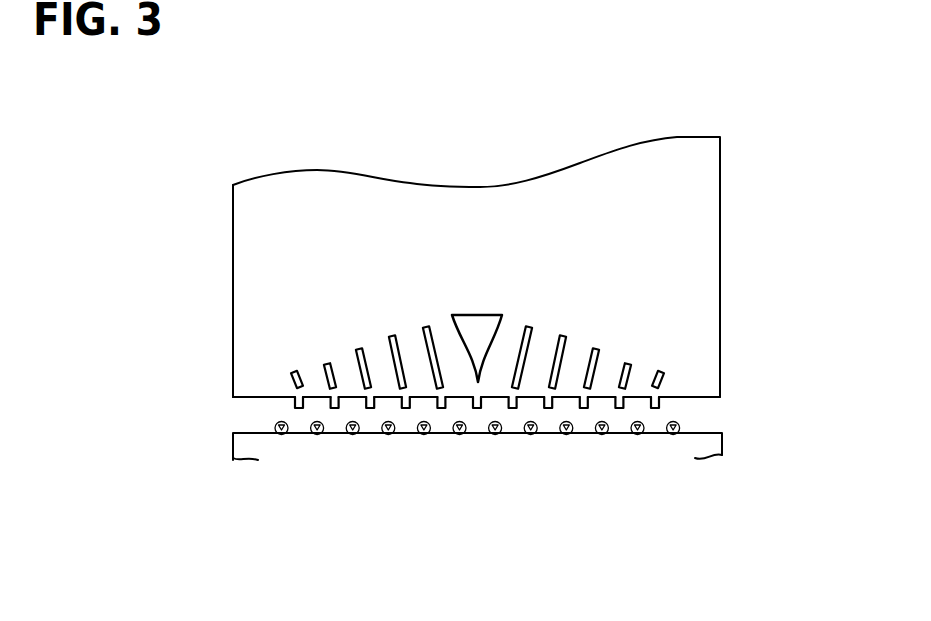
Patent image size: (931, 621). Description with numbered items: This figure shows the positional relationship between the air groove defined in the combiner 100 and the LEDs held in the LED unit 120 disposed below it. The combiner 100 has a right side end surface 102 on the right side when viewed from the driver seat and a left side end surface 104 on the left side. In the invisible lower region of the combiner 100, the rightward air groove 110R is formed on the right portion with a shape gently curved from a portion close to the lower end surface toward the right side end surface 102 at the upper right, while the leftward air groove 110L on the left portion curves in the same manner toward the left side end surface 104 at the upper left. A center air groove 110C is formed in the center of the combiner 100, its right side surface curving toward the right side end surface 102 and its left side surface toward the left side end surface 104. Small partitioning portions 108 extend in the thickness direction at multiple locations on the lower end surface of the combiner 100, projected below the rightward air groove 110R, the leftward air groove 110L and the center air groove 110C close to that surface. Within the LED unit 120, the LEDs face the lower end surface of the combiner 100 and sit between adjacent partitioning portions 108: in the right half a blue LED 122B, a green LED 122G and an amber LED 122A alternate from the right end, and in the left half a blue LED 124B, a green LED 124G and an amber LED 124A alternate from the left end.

The combiner 100 is at (202, 147).
The right side end surface 102 is at (720, 248).
The left side end surface 104 is at (233, 250).
The partitioning portion 108 is at (372, 410).
The leftward air groove 110L is at (424, 327).
The center air groove 110C is at (476, 314).
The rightward air groove 110R is at (531, 327).
The LED unit 120 is at (233, 447).
The amber LED 122A is at (495, 435).
The green LED 122G is at (531, 435).
The blue LED 122B is at (566, 435).
The amber LED 124A is at (353, 435).
The green LED 124G is at (317, 435).
The blue LED 124B is at (282, 435).